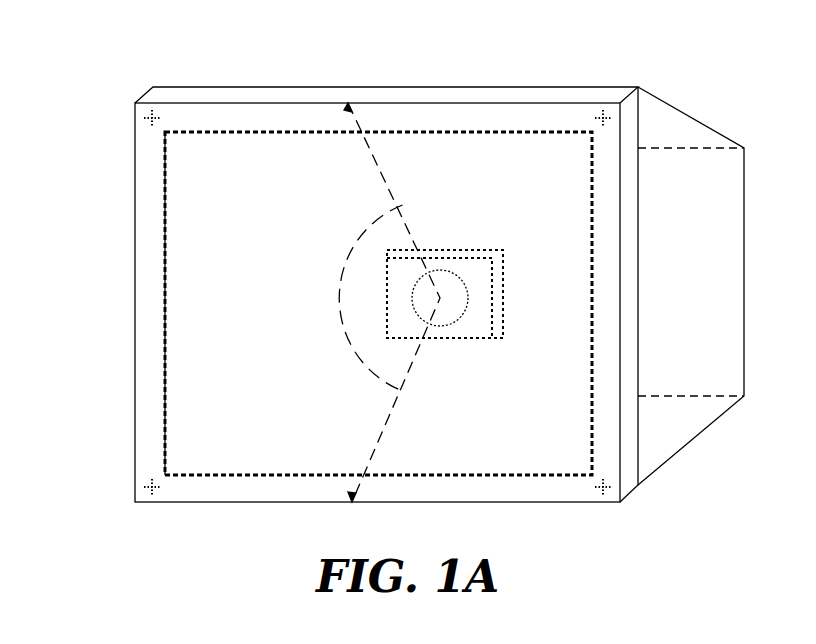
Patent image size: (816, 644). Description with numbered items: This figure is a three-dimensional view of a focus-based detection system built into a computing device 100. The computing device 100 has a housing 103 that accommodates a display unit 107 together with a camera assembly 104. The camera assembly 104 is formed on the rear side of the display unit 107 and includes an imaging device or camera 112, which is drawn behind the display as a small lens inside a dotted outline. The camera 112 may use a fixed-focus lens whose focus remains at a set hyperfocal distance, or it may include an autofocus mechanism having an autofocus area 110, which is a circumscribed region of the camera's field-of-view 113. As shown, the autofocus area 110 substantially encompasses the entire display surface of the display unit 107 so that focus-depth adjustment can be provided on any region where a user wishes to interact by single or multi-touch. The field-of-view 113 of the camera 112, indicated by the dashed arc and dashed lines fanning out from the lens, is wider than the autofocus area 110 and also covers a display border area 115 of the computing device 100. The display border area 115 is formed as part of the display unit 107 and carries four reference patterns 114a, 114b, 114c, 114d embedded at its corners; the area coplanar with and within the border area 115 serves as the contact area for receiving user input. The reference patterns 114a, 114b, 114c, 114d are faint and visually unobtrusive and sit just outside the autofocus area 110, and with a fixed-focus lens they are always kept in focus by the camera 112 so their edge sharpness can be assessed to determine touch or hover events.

The computing device 100 is at (232, 45).
The housing 103 is at (490, 87).
The camera assembly 104 is at (462, 250).
The display unit 107 is at (165, 407).
The autofocus area 110 is at (556, 201).
The camera 112 is at (468, 300).
The field-of-view 113 is at (340, 298).
The reference pattern 114a is at (170, 118).
The reference pattern 114b is at (585, 118).
The reference pattern 114c is at (175, 485).
The reference pattern 114d is at (584, 486).
The display border area 115 is at (150, 285).